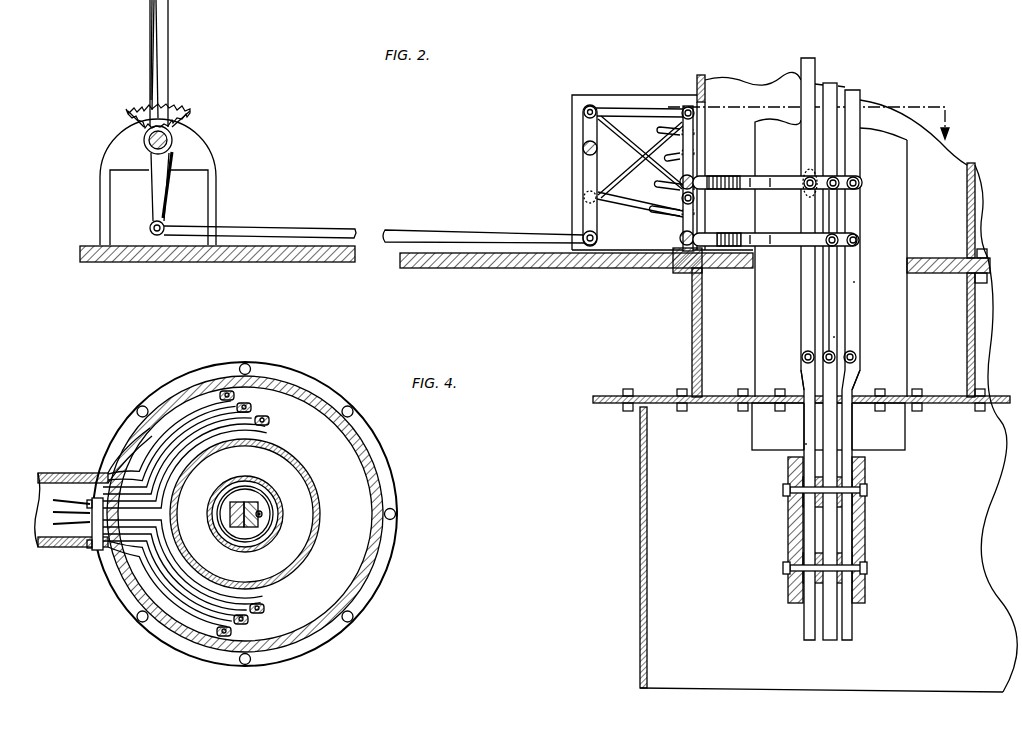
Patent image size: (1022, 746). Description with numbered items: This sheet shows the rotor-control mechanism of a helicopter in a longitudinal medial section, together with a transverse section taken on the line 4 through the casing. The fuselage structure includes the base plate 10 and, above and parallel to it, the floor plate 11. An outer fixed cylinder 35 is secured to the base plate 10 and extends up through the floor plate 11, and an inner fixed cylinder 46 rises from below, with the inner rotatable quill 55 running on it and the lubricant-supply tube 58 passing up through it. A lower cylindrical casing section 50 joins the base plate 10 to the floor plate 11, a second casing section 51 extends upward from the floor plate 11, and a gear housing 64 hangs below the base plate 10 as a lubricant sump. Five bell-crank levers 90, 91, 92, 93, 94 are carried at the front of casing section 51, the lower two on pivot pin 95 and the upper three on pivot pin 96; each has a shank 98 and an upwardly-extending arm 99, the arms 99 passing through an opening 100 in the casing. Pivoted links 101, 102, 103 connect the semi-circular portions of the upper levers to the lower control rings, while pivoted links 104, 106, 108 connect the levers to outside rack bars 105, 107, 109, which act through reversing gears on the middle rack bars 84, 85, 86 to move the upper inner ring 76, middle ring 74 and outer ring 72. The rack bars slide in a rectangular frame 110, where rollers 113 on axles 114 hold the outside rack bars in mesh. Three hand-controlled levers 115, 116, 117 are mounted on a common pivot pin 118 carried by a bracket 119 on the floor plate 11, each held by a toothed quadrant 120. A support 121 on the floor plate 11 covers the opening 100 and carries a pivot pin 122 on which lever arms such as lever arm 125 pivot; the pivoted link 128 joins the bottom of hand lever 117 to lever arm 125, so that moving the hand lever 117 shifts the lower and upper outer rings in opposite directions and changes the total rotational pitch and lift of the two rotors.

In FIG. 2, the section line 4— 4 is at (660, 146).
In FIG. 2, the base plate 10 is at (618, 395).
In FIG. 2, the floor plate 11 is at (630, 258).
In FIG. 2, the outer fixed cylinder 35 is at (755, 345).
In FIG. 4, the inner fixed cylinder 46 is at (268, 530).
In FIG. 2, the cylindrical casing section 50 is at (692, 329).
In FIG. 2, the second cylindrical casing section 51 is at (700, 78).
In FIG. 4, the second cylindrical casing section 51 is at (383, 487).
In FIG. 4, the inner rotatable quill 55 is at (243, 551).
In FIG. 4, the lubricant-supply tube 58 is at (262, 514).
In FIG. 2, the gear housing 64 is at (640, 558).
In FIG. 2, the outer ring 72 is at (806, 443).
In FIG. 2, the middle ring 74 is at (834, 336).
In FIG. 2, the inner ring 76 is at (854, 281).
In FIG. 4, the rack bar 84 is at (250, 482).
In FIG. 4, the rack bar 85 is at (260, 489).
In FIG. 4, the rack bar 86 is at (267, 498).
In FIG. 2, the bell-crank lever 90 is at (855, 190).
In FIG. 4, the bell-crank lever 90 is at (214, 428).
In FIG. 2, the bell-crank lever 91 is at (822, 190).
In FIG. 4, the bell-crank lever 91 is at (192, 425).
In FIG. 2, the bell-crank lever 92 is at (793, 178).
In FIG. 4, the bell-crank lever 92 is at (168, 418).
In FIG. 2, the bell-crank lever 93 is at (858, 236).
In FIG. 2, the bell-crank lever 94 is at (751, 236).
In FIG. 2, the pivot pin 95 is at (680, 239).
In FIG. 2, the pivot pin 96 is at (696, 180).
In FIG. 4, the pivot pin 96 is at (108, 460).
In FIG. 2, the shank 98 is at (704, 190).
In FIG. 4, the shank 98 is at (143, 513).
In FIG. 2, the upwardly-extending arm 99 is at (682, 214).
In FIG. 2, the opening 100 is at (700, 113).
In FIG. 2, the pivoted links 101 is at (860, 90).
In FIG. 4, the pivoted links 101 is at (265, 427).
In FIG. 2, the pivoted links 102 is at (832, 82).
In FIG. 4, the pivoted links 102 is at (253, 407).
In FIG. 2, the pivoted links 103 is at (806, 66).
In FIG. 4, the pivoted links 103 is at (231, 397).
In FIG. 2, the pivoted links 104 is at (857, 310).
In FIG. 2, the outside rack bars 105 is at (860, 387).
In FIG. 2, the pivoted links 106 is at (828, 310).
In FIG. 2, the outside rack bars 107 is at (840, 431).
In FIG. 2, the pivoted links 108 is at (803, 296).
In FIG. 2, the outside rack bars 109 is at (806, 430).
In FIG. 2, the rectangular frame 110 is at (788, 529).
In FIG. 2, the rollers 113 is at (812, 506).
In FIG. 2, the axles 114 is at (783, 490).
In FIG. 2, the hand-controlled lever 115 is at (148, 0).
In FIG. 2, the hand-controlled lever 116 is at (150, 11).
In FIG. 2, the hand-controlled lever 117 is at (160, 28).
In FIG. 2, the pivot pin 118 is at (144, 138).
In FIG. 2, the bracket 119 is at (106, 166).
In FIG. 2, the toothed quadrant 120 is at (128, 112).
In FIG. 2, the support 121 is at (583, 108).
In FIG. 4, the support 121 is at (65, 473).
In FIG. 2, the pivot pin 122 is at (583, 150).
In FIG. 2, the lever arm 125 is at (590, 176).
In FIG. 2, the pivoted link 128 is at (460, 228).